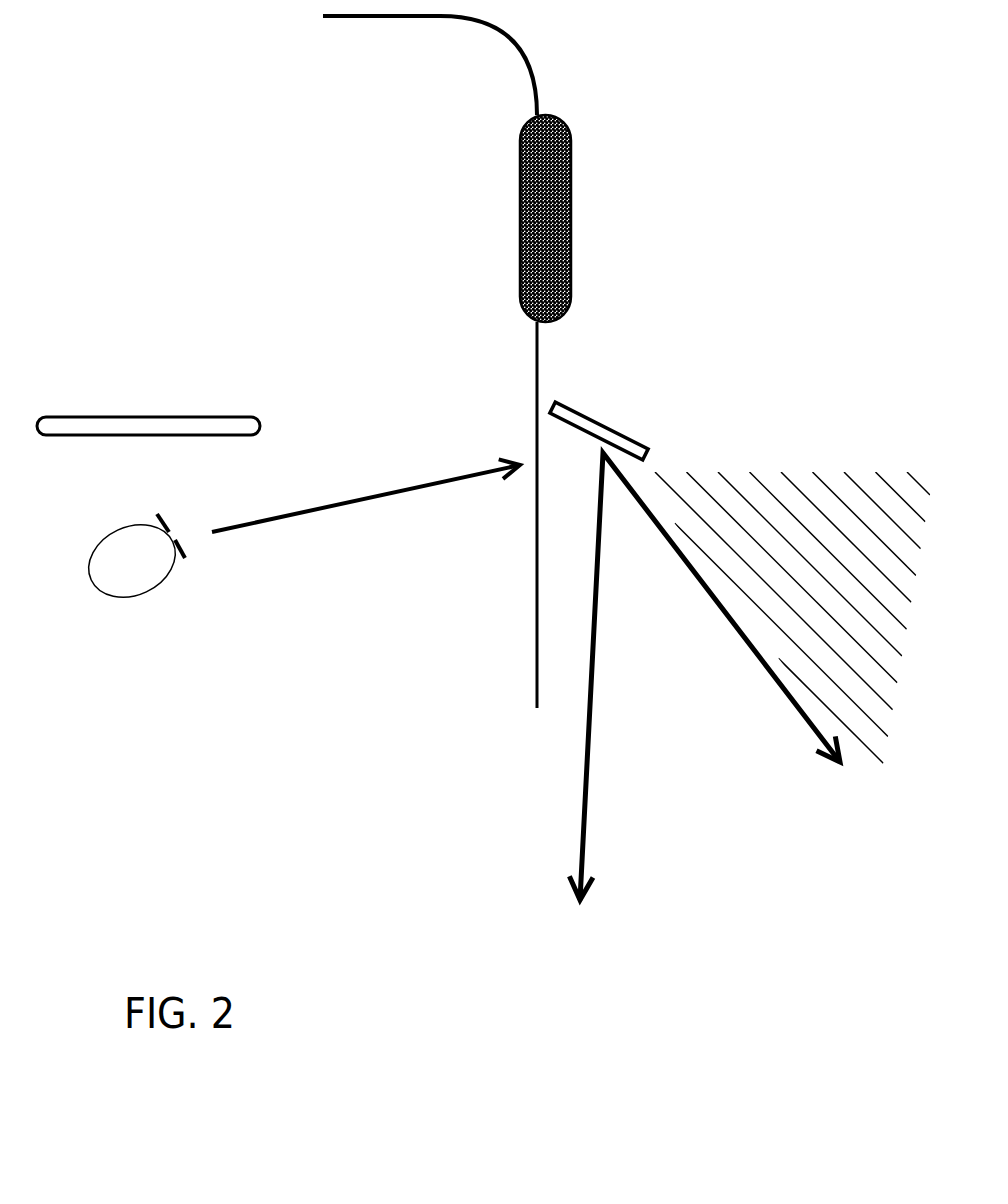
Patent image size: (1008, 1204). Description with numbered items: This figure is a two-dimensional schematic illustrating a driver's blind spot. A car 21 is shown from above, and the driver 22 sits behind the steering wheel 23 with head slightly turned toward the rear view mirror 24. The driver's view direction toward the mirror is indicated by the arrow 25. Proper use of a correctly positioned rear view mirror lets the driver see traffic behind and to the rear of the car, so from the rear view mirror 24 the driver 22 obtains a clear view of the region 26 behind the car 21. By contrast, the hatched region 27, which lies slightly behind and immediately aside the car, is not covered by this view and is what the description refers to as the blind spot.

The car 21 is at (496, 70).
The driver 22 is at (128, 580).
The steering wheel 23 is at (113, 423).
The rear view mirror 24 is at (597, 422).
The arrow 25 is at (300, 530).
The region 26 is at (658, 807).
The blind spot region 27 is at (760, 478).